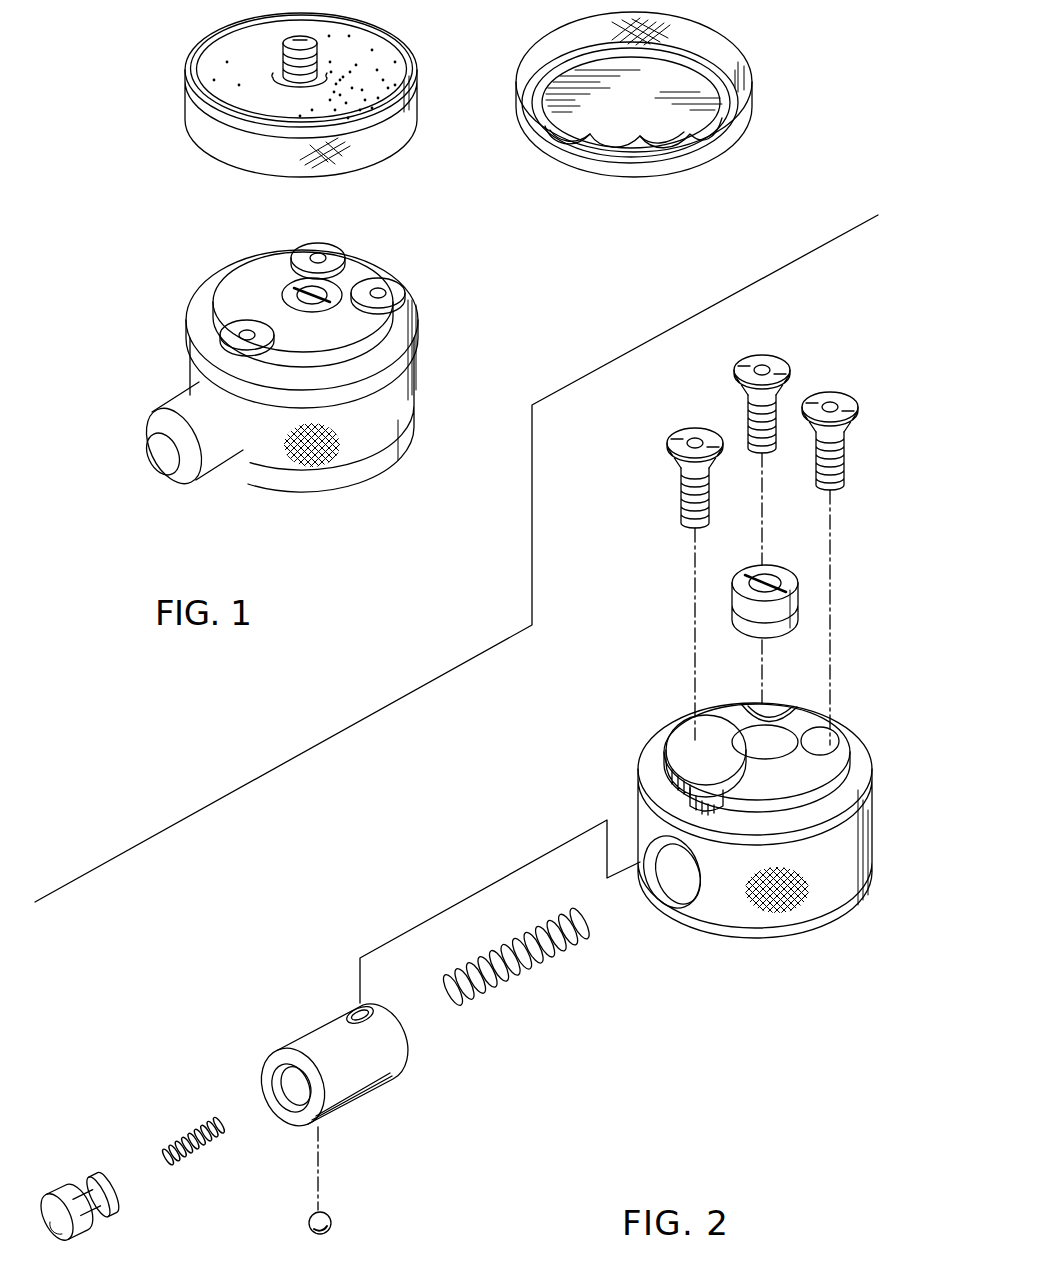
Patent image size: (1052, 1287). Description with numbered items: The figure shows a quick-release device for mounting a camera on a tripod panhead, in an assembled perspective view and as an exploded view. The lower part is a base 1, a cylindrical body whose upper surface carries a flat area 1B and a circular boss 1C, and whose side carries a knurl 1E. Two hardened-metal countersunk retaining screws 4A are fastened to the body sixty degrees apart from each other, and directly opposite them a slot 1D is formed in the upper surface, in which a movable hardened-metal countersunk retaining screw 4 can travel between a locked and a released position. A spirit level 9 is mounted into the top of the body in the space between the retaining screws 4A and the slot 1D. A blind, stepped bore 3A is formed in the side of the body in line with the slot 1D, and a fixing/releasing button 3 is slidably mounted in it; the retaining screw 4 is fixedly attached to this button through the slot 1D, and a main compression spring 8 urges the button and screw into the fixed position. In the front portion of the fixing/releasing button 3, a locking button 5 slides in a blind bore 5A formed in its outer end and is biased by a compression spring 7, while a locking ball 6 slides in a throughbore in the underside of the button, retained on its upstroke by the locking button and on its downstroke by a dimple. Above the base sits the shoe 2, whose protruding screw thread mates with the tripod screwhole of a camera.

In FIG. 1, the base 1 is at (238, 278).
In FIG. 2, the base 1 is at (727, 836).
In FIG. 2, the flat area 1B is at (662, 750).
In FIG. 2, the circular boss 1C is at (688, 742).
In FIG. 2, the slot 1D is at (700, 805).
In FIG. 2, the knurl 1E is at (745, 905).
In FIG. 1, the shoe 2 is at (518, 88).
In FIG. 2, the fixing/releasing button 3 is at (317, 1062).
In FIG. 2, the stepped bore 3A is at (654, 914).
In FIG. 2, the retaining screw (movable) 4 is at (667, 449).
In FIG. 2, the retaining screws (stationary) 4A is at (831, 392).
In FIG. 2, the locking button 5 is at (60, 1196).
In FIG. 2, the blind bore (for locking button) 5A is at (280, 1108).
In FIG. 2, the locking ball 6 is at (334, 1220).
In FIG. 2, the compression spring (locking button) 7 is at (195, 1138).
In FIG. 2, the main compression spring 8 is at (527, 972).
In FIG. 2, the spirit level 9 is at (778, 566).